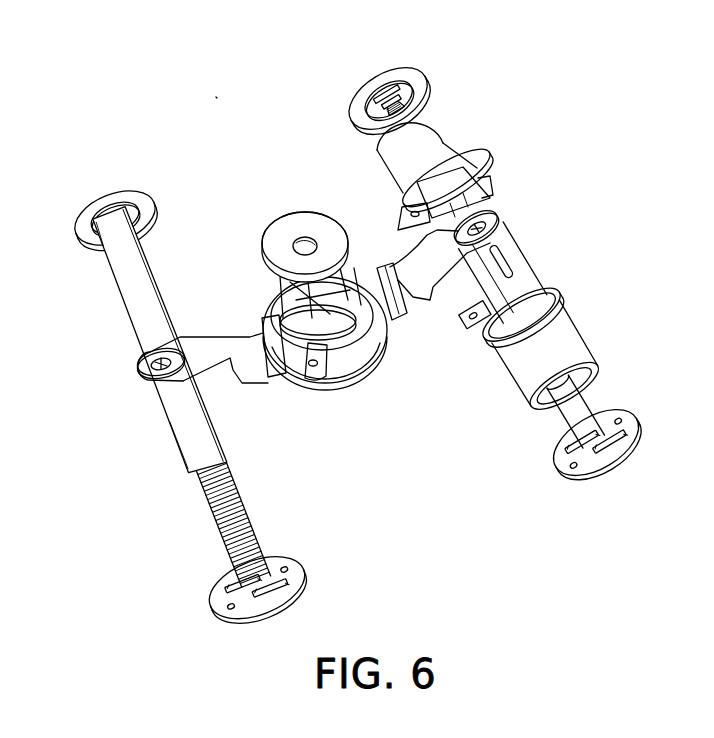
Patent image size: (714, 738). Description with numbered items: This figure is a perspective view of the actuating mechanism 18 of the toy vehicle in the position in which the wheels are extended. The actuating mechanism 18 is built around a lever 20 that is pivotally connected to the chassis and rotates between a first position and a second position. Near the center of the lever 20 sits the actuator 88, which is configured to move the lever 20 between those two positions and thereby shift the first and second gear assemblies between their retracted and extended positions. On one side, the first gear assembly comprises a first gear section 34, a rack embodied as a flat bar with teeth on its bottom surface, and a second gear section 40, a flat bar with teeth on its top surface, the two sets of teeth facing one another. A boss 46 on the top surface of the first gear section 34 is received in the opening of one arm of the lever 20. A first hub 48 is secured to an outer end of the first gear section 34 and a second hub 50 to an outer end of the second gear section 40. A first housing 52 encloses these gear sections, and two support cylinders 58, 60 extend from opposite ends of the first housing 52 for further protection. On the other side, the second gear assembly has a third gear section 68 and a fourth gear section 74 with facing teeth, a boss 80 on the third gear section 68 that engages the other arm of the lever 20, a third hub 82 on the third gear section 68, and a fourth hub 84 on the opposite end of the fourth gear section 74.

The actuating mechanism 18 is at (218, 98).
The lever 20 is at (370, 372).
The first gear section 34 is at (597, 393).
The second gear section 40 is at (366, 128).
The boss 46 is at (487, 193).
The first hub 48 is at (597, 465).
The second hub 50 is at (385, 70).
The first housing 52 is at (512, 265).
The support cylinder 58 is at (563, 333).
The support cylinder 60 is at (426, 137).
The third gear section 68 is at (113, 252).
The fourth gear section 74 is at (207, 513).
The boss 80 is at (142, 378).
The third hub 82 is at (96, 198).
The fourth hub 84 is at (290, 588).
The actuator 88 is at (263, 230).